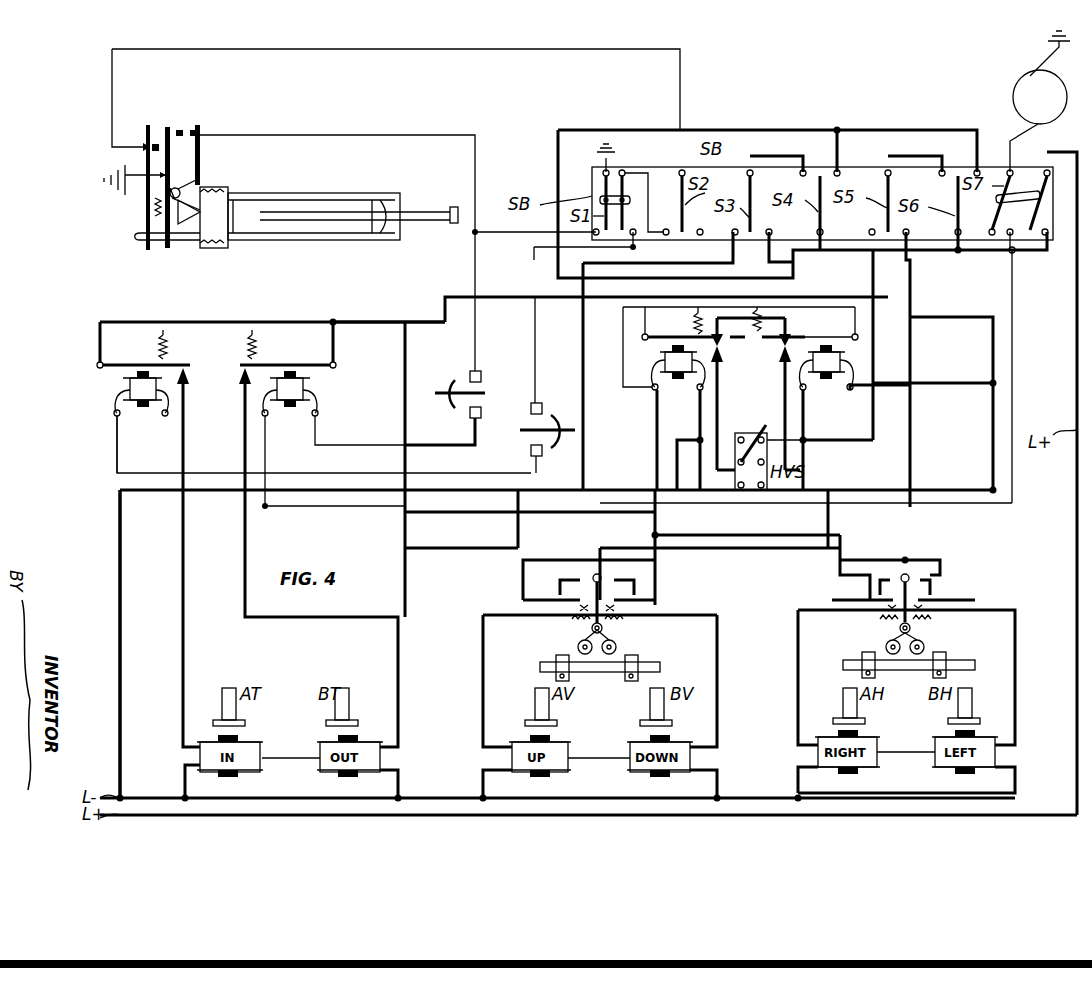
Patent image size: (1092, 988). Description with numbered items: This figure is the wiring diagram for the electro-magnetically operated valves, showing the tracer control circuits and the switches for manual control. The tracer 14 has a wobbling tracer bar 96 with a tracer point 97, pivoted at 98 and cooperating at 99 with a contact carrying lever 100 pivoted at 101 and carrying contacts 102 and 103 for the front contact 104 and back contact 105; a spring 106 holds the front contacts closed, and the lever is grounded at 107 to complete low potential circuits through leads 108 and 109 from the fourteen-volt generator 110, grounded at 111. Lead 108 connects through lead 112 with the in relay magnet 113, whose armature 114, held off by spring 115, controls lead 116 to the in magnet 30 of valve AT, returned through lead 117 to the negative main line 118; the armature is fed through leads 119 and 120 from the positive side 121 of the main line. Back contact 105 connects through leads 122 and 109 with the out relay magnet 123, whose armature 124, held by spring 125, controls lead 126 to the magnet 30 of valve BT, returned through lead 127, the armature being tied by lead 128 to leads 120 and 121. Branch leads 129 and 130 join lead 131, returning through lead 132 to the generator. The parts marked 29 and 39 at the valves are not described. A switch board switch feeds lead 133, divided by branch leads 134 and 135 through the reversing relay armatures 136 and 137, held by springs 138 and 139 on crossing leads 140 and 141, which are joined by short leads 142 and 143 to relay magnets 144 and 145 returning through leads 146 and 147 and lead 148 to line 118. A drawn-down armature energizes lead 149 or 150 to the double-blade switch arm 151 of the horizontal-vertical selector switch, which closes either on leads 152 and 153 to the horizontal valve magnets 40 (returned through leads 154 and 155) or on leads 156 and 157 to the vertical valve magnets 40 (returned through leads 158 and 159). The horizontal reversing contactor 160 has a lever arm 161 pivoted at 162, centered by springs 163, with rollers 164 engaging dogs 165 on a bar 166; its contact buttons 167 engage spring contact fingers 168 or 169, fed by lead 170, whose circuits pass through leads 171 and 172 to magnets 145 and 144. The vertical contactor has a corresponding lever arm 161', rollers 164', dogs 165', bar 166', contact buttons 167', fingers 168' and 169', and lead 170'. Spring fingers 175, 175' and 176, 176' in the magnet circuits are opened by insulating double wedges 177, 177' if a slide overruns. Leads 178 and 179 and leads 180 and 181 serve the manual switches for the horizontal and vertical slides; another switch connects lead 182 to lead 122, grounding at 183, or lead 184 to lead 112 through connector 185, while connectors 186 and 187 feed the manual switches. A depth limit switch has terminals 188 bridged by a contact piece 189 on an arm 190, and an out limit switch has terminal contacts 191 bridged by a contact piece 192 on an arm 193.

The tracer 14 is at (302, 193).
The control lever 29 is at (326, 722).
The electro-magnet 30 is at (320, 760).
The control lever 39 is at (948, 721).
The valve magnet 40 is at (630, 760).
The tracer bar 96 is at (430, 222).
The tracer point 97 is at (457, 208).
The pivot 98 is at (386, 196).
The cooperating point 99 is at (187, 228).
The contact carrying lever 100 is at (170, 241).
The pivot 101 is at (180, 190).
The contact 102 is at (167, 126).
The contact 103 is at (180, 129).
The front contact 104 is at (146, 146).
The back contact 105 is at (197, 131).
The spring 106 is at (155, 214).
The ground 107 is at (106, 186).
The lead 108 is at (598, 49).
The lead 109 is at (445, 300).
The generator 110 is at (1013, 96).
The ground 111 is at (1049, 41).
The lead 112 is at (535, 297).
The in relay magnet 113 is at (123, 386).
The armature 114 is at (155, 363).
The spring 115 is at (168, 350).
The lead 116 is at (183, 380).
The lead 117 is at (185, 796).
The main line 118 is at (120, 796).
The lead 119 is at (100, 322).
The lead 120 is at (1010, 252).
The positive side of main line 121 is at (120, 815).
The lead 122 is at (335, 135).
The out relay magnet 123 is at (312, 386).
The armature 124 is at (258, 360).
The spring 125 is at (258, 336).
The lead 126 is at (245, 392).
The lead 127 is at (398, 790).
The lead 128 is at (335, 325).
The branch lead 129 is at (150, 445).
The branch lead 130 is at (268, 452).
The lead 131 is at (345, 505).
The lead 132 is at (1010, 140).
The lead 133 is at (837, 128).
The branch lead 134 is at (856, 338).
The branch lead 135 is at (640, 335).
The armature 136 is at (802, 335).
The armature 137 is at (643, 337).
The spring 138 is at (785, 330).
The spring 139 is at (645, 322).
The lead 140 is at (785, 340).
The lead 141 is at (723, 338).
The short lead 142 is at (655, 390).
The short lead 143 is at (850, 392).
The relay magnet 144 is at (678, 367).
The relay magnet 145 is at (826, 367).
The lead 146 is at (700, 390).
The lead 147 is at (803, 400).
The lead 148 is at (592, 490).
The lead 149 is at (785, 368).
The lead 150 is at (717, 370).
The switch arm 151 is at (790, 448).
The lead 152 is at (810, 512).
The lead 153 is at (735, 512).
The lead 154 is at (798, 795).
The lead 155 is at (1015, 770).
The lead 156 is at (741, 440).
The lead 157 is at (762, 438).
The lead 158 is at (483, 796).
The lead 159 is at (717, 755).
The reversing contactor 160 is at (918, 616).
The lever arm 161 is at (868, 619).
The lever arm 161' is at (580, 607).
The pivot 162 is at (897, 632).
The springs 163 is at (915, 632).
The rollers 164 is at (905, 672).
The rollers 164' is at (620, 645).
The dogs 165 is at (910, 679).
The dogs 165' is at (597, 679).
The bar 166 is at (909, 674).
The bar 166' is at (575, 651).
The contact buttons 167 is at (941, 581).
The contact buttons 167' is at (628, 570).
The spring contact fingers 168 is at (930, 578).
The spring contact fingers 168' is at (682, 577).
The spring contact fingers 169 is at (894, 547).
The spring contact fingers 169' is at (562, 578).
The lead 170 is at (654, 557).
The lead 170' is at (720, 547).
The lead 171 is at (932, 384).
The lead 172 is at (585, 440).
The spring fingers 175 is at (943, 617).
The spring fingers 175' is at (607, 615).
The spring fingers 176 is at (818, 589).
The spring fingers 176' is at (485, 594).
The double wedge 177 is at (846, 545).
The double wedge 177' is at (673, 594).
The lead 178 is at (880, 272).
The lead 179 is at (910, 338).
The lead 180 is at (718, 263).
The lead 181 is at (770, 261).
The lead 182 is at (534, 247).
The ground 183 is at (600, 165).
The lead 184 is at (635, 247).
The connector 185 is at (648, 171).
The connector 186 is at (777, 155).
The connector 187 is at (906, 155).
The connecting terminals 188 is at (545, 408).
The contact piece 189 is at (536, 452).
The rod or arm 190 is at (535, 430).
The terminal contacts 191 is at (483, 373).
The contact piece 192 is at (465, 380).
The rod or arm 193 is at (455, 402).